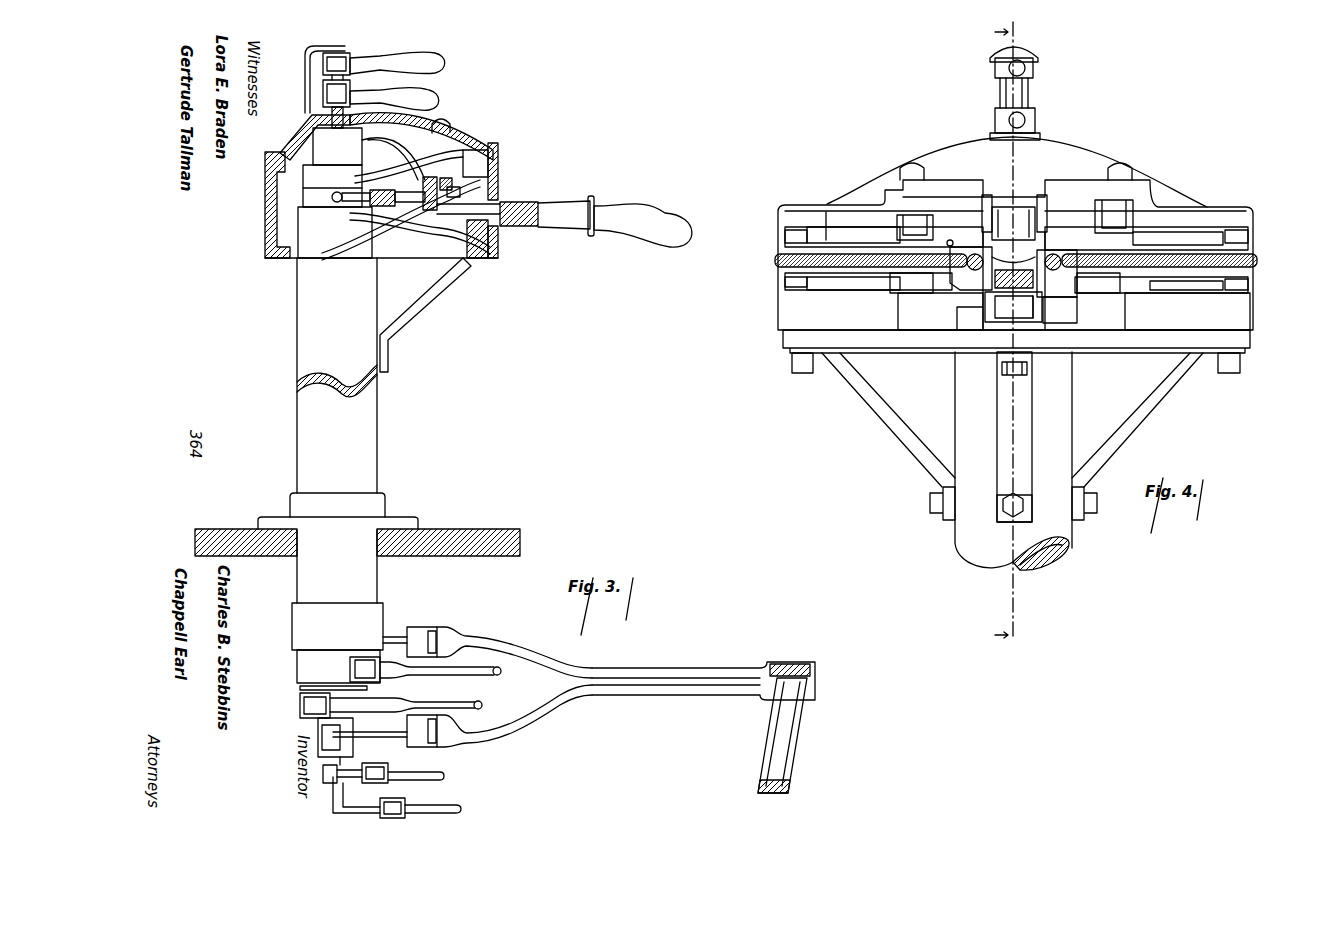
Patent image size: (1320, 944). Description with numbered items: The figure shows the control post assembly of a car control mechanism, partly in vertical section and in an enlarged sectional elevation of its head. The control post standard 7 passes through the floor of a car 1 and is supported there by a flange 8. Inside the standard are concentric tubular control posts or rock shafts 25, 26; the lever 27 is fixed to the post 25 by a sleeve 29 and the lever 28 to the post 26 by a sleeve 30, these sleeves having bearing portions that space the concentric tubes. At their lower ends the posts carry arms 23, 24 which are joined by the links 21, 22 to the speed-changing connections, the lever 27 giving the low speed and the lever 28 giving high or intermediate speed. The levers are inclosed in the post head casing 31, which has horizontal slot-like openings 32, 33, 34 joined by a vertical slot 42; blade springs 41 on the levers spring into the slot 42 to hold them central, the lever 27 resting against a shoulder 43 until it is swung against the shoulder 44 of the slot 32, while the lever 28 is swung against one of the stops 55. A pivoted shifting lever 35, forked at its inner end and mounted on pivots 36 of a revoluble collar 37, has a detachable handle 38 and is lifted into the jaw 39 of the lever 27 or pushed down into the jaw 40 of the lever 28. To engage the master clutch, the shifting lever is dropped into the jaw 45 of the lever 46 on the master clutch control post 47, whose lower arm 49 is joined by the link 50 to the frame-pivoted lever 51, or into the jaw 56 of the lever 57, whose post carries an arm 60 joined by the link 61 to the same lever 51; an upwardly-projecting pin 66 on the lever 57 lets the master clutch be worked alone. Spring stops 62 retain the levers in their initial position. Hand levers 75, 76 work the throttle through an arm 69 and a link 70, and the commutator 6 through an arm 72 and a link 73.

In FIG. 3, the floor of a car 1 is at (490, 536).
In FIG. 4, the commutator 6 is at (996, 335).
In FIG. 3, the control post standard 7 is at (357, 420).
In FIG. 4, the control post standard 7 is at (955, 396).
In FIG. 3, the flange 8 is at (390, 520).
In FIG. 3, the link 21 is at (475, 706).
In FIG. 3, the link 22 is at (494, 674).
In FIG. 3, the arm 23 is at (301, 705).
In FIG. 3, the arm 24 is at (352, 668).
In FIG. 3, the tubular control post 25 is at (300, 688).
In FIG. 3, the control post rock shaft 26 is at (300, 660).
In FIG. 3, the lever 27 is at (452, 150).
In FIG. 3, the lever 28 is at (455, 276).
In FIG. 3, the sleeve 29 is at (313, 168).
In FIG. 3, the sleeve 30 is at (298, 225).
In FIG. 3, the post head casing 31 is at (270, 243).
In FIG. 4, the post head casing 31 is at (1240, 220).
In FIG. 4, the slot-like opening 32 is at (1198, 222).
In FIG. 4, the slot-like opening 33 is at (826, 212).
In FIG. 4, the slot-like openings 34 is at (785, 284).
In FIG. 3, the shifting lever 35 is at (482, 200).
In FIG. 4, the shifting lever 35 is at (1035, 276).
In FIG. 3, the pivots 36 is at (318, 195).
In FIG. 3, the collar 37 is at (320, 198).
In FIG. 3, the detachable handle 38 is at (540, 215).
In FIG. 3, the jaw 39 is at (486, 165).
In FIG. 4, the jaw 39 is at (990, 193).
In FIG. 3, the jaw 40 is at (490, 238).
In FIG. 4, the jaw 40 is at (1000, 322).
In FIG. 3, the blade springs 41 is at (478, 150).
In FIG. 4, the blade springs 41 is at (1035, 300).
In FIG. 4, the vertical slot 42 is at (975, 275).
In FIG. 4, the shoulder 43 is at (945, 192).
In FIG. 4, the shoulder 44 is at (1135, 205).
In FIG. 4, the jaw 45 is at (885, 240).
In FIG. 3, the lever 46 is at (392, 160).
In FIG. 3, the master clutch control post 47 is at (345, 748).
In FIG. 3, the arm 49 is at (385, 735).
In FIG. 3, the link 50 is at (645, 690).
In FIG. 3, the lever 51 is at (790, 735).
In FIG. 4, the stops 55 is at (898, 320).
In FIG. 3, the jaw 56 is at (454, 185).
In FIG. 4, the jaw 56 is at (893, 290).
In FIG. 3, the lever 57 is at (396, 228).
In FIG. 3, the arm 60 is at (386, 632).
In FIG. 3, the link 61 is at (496, 644).
In FIG. 3, the spring stops 62 is at (447, 120).
In FIG. 4, the spring stops 62 is at (908, 168).
In FIG. 4, the pin 66 is at (960, 236).
In FIG. 3, the arm 69 is at (333, 786).
In FIG. 3, the link 70 is at (425, 773).
In FIG. 3, the arm 72 is at (348, 806).
In FIG. 3, the link 73 is at (458, 808).
In FIG. 3, the hand lever 75 is at (437, 94).
In FIG. 4, the hand lever 75 is at (1030, 118).
In FIG. 3, the hand lever 76 is at (444, 63).
In FIG. 4, the hand lever 76 is at (1028, 68).